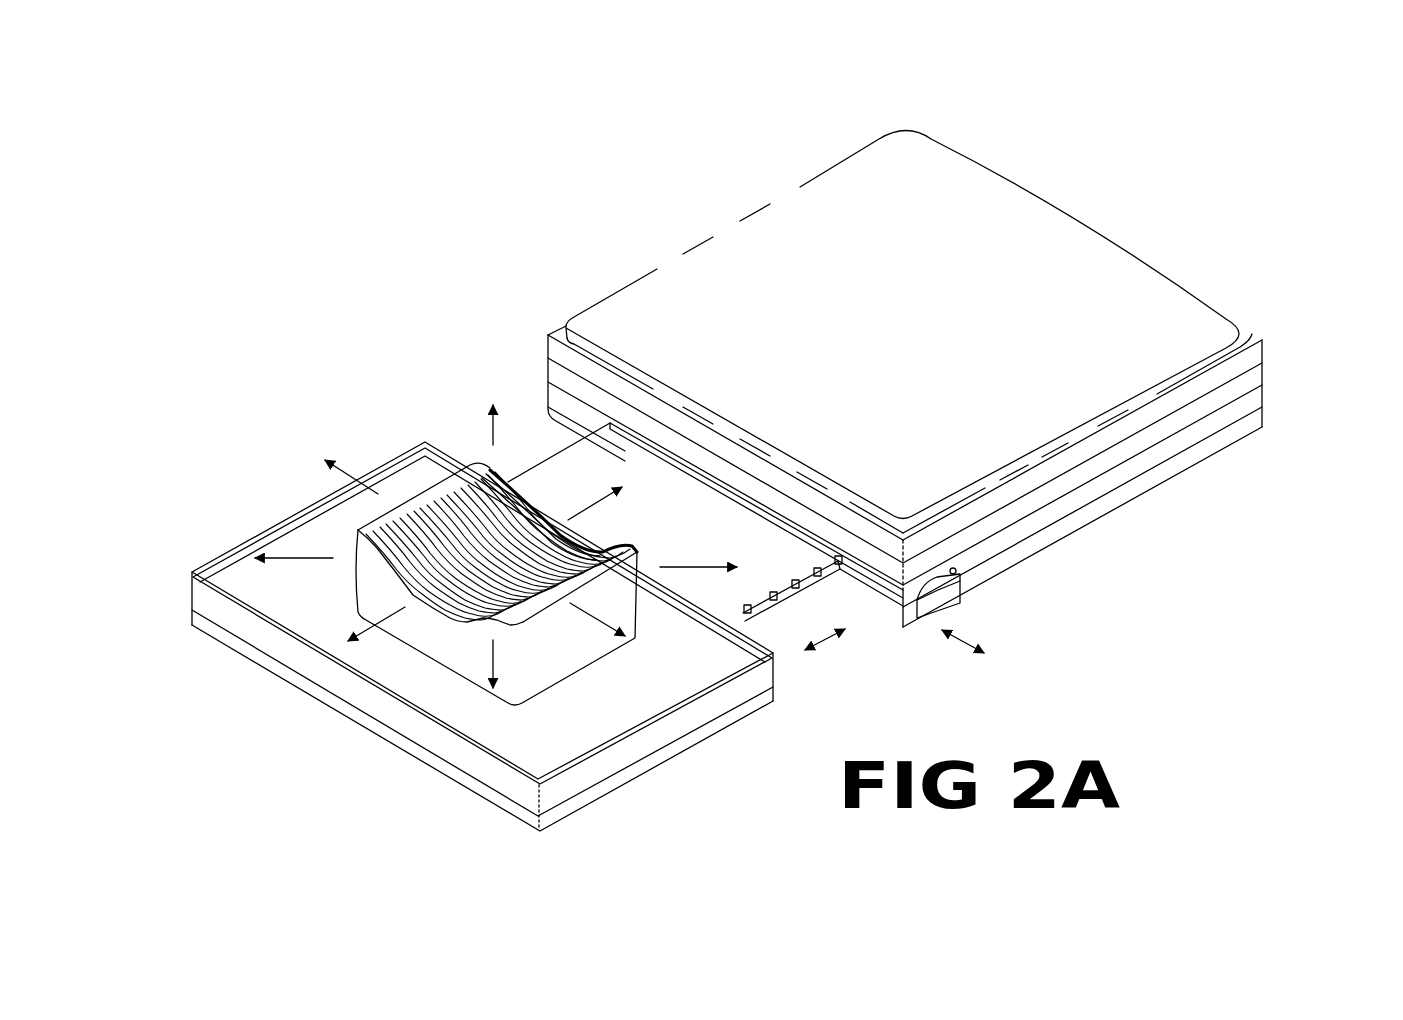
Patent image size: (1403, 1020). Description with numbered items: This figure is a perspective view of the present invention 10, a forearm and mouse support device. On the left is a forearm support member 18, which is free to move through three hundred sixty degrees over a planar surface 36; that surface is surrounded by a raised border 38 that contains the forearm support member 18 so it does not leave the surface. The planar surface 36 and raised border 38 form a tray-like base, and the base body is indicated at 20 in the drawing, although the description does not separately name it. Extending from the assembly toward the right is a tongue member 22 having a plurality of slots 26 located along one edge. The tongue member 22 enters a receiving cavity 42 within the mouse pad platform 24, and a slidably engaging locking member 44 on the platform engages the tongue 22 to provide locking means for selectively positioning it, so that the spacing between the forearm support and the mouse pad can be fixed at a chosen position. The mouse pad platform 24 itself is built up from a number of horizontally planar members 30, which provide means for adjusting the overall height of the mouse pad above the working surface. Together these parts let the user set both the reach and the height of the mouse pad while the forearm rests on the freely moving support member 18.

The present invention 10 is at (637, 202).
The forearm support member 18 is at (550, 652).
The base tray 20 is at (647, 747).
The tongue member 22 is at (565, 473).
The mouse pad platform 24 is at (1262, 346).
The slots 26 is at (790, 590).
The horizontally planar members 30 is at (1150, 427).
The planar surface 36 is at (493, 720).
The raised border 38 is at (656, 710).
The receiving cavity 42 is at (705, 487).
The slidably engaging locking member 44 is at (960, 604).